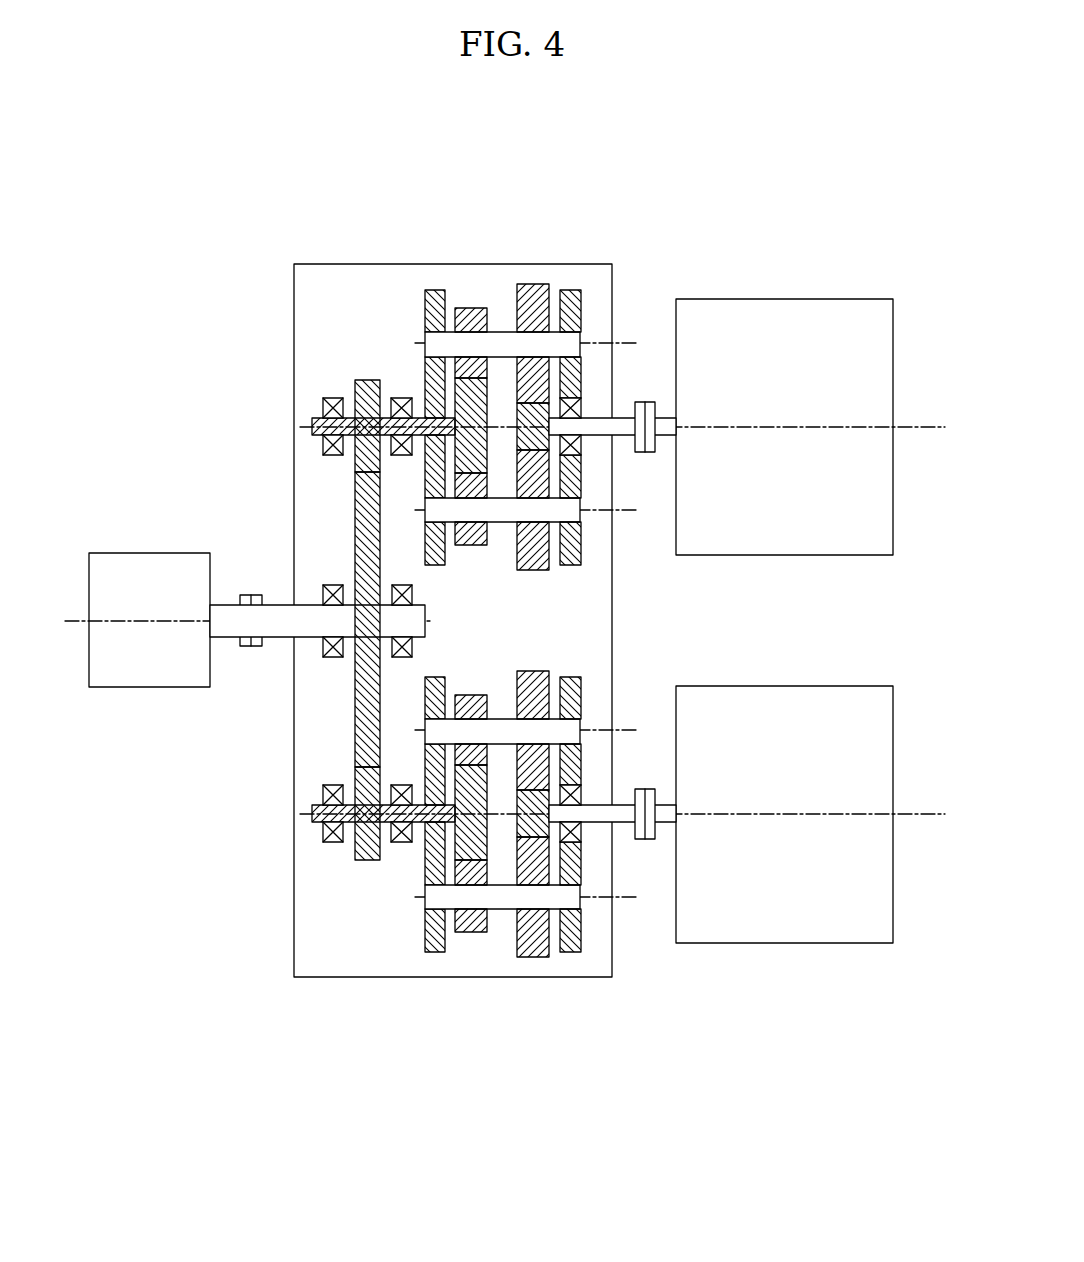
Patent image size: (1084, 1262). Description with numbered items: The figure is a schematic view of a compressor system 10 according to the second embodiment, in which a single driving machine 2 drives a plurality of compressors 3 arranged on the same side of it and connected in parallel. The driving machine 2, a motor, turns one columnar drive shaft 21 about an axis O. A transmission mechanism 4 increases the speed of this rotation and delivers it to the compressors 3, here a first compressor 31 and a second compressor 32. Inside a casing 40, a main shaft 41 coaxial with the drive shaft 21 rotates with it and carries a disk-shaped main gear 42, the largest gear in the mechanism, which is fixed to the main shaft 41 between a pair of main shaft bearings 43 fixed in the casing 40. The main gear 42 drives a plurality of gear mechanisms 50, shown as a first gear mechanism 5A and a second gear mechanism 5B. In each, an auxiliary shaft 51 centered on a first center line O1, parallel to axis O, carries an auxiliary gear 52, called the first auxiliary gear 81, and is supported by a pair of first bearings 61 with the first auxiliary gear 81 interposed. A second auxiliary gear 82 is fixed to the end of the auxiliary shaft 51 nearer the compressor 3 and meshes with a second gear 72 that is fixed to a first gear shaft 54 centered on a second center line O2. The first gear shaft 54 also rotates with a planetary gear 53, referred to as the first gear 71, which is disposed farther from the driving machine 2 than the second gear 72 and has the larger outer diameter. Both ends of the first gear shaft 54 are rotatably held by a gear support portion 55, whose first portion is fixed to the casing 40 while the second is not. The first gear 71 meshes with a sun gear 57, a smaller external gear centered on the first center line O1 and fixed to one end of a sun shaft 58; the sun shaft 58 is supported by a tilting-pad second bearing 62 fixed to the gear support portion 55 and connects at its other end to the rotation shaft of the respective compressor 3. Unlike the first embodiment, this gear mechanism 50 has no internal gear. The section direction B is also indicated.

The driving machine 2 is at (149, 553).
The compressor 3 is at (784, 590).
The transmission mechanism 4 is at (512, 257).
The compressor system 10 is at (788, 205).
The drive shaft 21 is at (223, 606).
The first compressor 31 is at (792, 322).
The second compressor 32 is at (792, 708).
The casing 40 is at (318, 278).
The main shaft 41 is at (283, 637).
The main gear 42 is at (353, 707).
The main shaft bearing 43 is at (398, 585).
The gear mechanism 50 is at (250, 605).
The first gear mechanism 5A is at (322, 336).
The second gear mechanism 5B is at (337, 897).
The auxiliary shaft 51 is at (313, 418).
The auxiliary gear 52 is at (457, 845).
The planetary gear 53 is at (537, 285).
The first gear shaft 54 is at (598, 508).
The gear support portion 55 is at (437, 290).
The sun gear 57 is at (533, 402).
The sun shaft 58 is at (585, 422).
The first bearing 61 is at (398, 458).
The second bearing 62 is at (578, 447).
The first gear 71 is at (532, 555).
The second gear 72 is at (470, 308).
The first auxiliary gear 81 is at (360, 385).
The second auxiliary gear 82 is at (447, 403).
The axis O is at (82, 620).
The first center line O1 is at (905, 427).
The second center line O2 is at (637, 343).
The viewing direction B is at (502, 212).